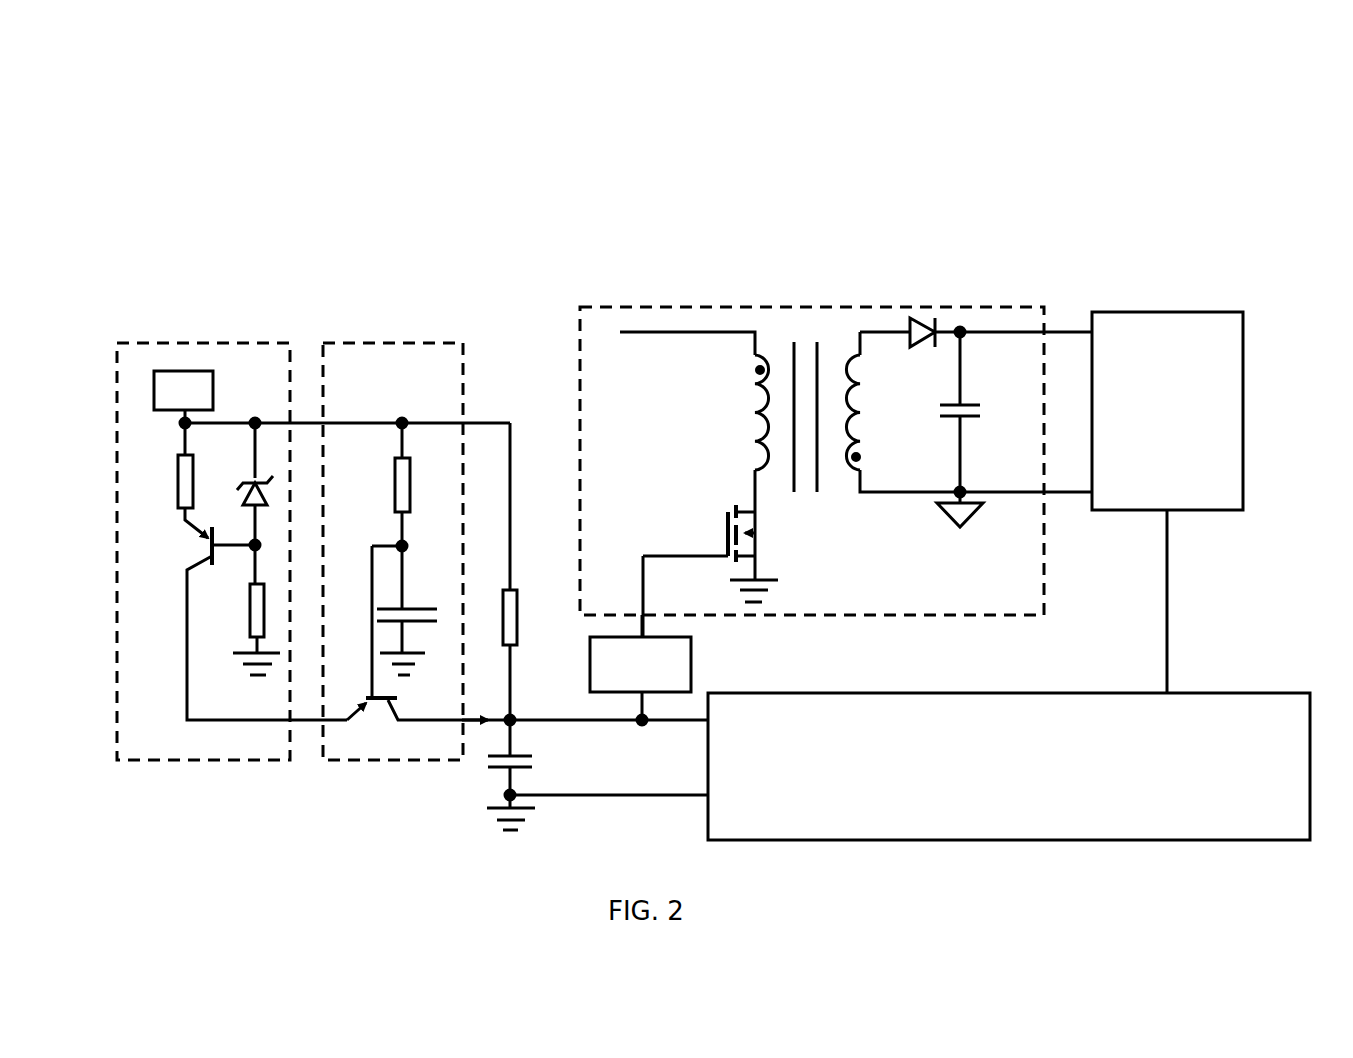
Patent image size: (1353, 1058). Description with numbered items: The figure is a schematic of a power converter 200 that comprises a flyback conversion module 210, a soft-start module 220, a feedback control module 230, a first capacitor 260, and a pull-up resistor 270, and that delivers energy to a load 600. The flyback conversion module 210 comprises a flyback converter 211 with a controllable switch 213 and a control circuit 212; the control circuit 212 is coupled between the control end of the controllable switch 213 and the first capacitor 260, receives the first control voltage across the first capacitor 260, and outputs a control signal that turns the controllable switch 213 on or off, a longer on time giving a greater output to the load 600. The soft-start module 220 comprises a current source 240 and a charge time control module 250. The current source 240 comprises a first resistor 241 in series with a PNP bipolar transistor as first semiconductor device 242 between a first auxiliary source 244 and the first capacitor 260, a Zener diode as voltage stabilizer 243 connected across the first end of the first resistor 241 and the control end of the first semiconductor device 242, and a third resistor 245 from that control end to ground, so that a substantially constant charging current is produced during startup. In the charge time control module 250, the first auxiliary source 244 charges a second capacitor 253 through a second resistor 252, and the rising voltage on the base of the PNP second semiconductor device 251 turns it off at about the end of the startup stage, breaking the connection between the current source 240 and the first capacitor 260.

The power converter 200 is at (228, 165).
The flyback conversion module 210 is at (840, 236).
The flyback converter 211 is at (955, 307).
The control circuit 212 is at (693, 668).
The controllable switch 213 is at (728, 525).
The soft-start module 220 is at (290, 306).
The feedback control module 230 is at (1215, 693).
The current source 240 is at (175, 762).
The first resistor 241 is at (163, 481).
The first semiconductor device 242 is at (178, 546).
The voltage stabilizer 243 is at (241, 484).
The first auxiliary source 244 is at (190, 370).
The third resistor 245 is at (242, 610).
The charge time control module 250 is at (412, 762).
The second semiconductor device 251 is at (374, 732).
The second resistor 252 is at (379, 484).
The second capacitor 253 is at (416, 610).
The first capacitor 260 is at (520, 767).
The pull-up resistor 270 is at (517, 623).
The load 600 is at (1154, 312).